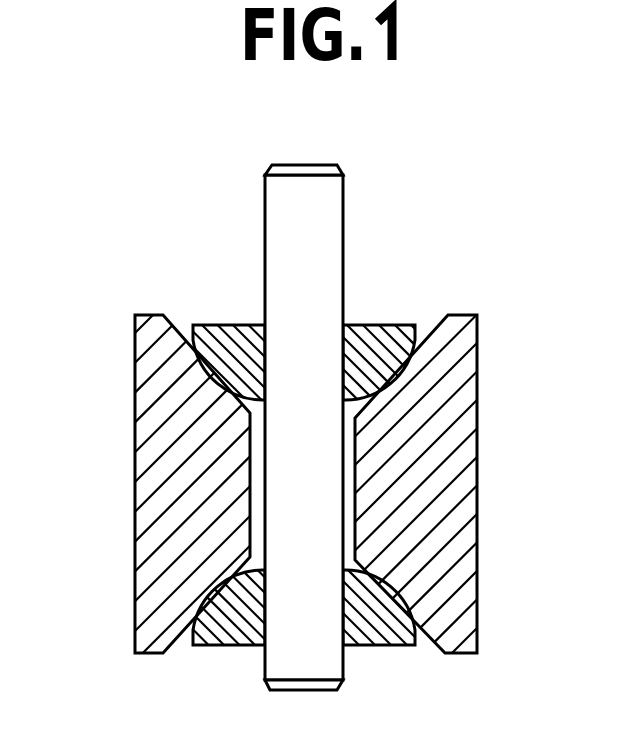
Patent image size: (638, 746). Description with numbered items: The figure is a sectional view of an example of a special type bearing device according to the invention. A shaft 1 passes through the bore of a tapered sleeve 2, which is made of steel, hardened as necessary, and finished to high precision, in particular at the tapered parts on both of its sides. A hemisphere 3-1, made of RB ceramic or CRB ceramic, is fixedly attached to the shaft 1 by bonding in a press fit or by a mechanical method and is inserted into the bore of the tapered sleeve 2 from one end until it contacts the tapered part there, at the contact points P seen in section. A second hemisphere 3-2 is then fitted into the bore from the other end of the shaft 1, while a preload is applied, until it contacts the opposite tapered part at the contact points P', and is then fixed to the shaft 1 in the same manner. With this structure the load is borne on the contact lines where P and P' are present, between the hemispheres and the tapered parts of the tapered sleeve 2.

The shaft 1 is at (327, 230).
The tapered sleeve 2 is at (167, 472).
The hemisphere 3-1 is at (230, 337).
The hemisphere 3-2 is at (218, 612).
The contact points P is at (466, 370).
The contact points P' is at (476, 562).